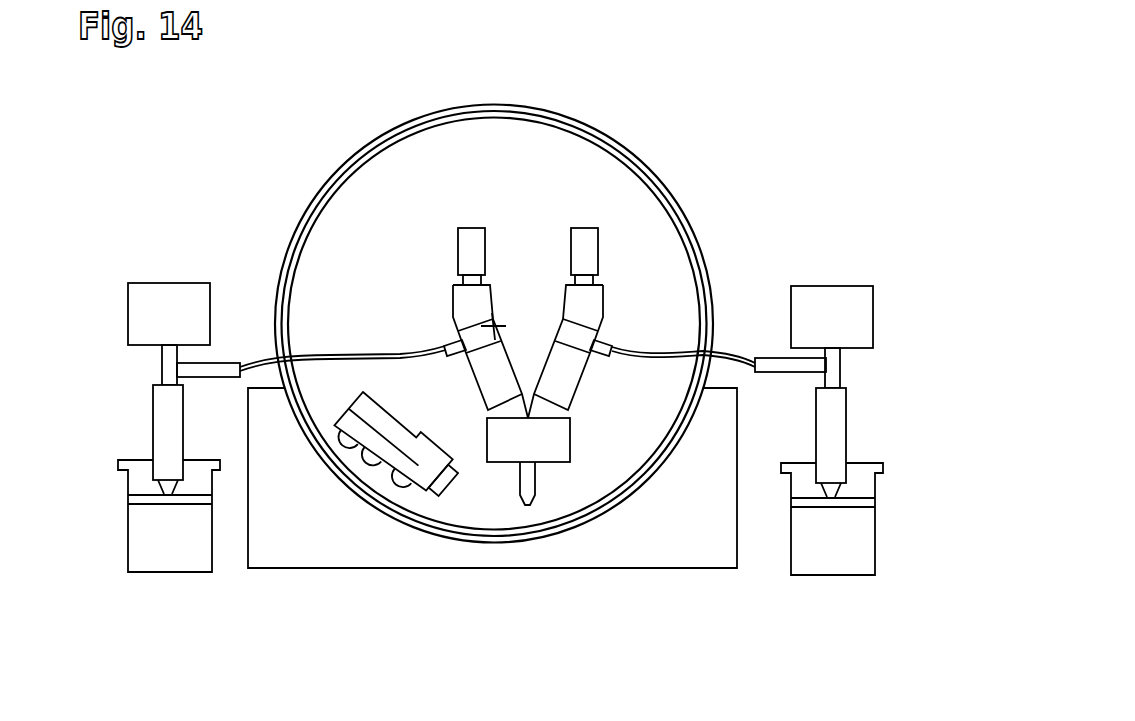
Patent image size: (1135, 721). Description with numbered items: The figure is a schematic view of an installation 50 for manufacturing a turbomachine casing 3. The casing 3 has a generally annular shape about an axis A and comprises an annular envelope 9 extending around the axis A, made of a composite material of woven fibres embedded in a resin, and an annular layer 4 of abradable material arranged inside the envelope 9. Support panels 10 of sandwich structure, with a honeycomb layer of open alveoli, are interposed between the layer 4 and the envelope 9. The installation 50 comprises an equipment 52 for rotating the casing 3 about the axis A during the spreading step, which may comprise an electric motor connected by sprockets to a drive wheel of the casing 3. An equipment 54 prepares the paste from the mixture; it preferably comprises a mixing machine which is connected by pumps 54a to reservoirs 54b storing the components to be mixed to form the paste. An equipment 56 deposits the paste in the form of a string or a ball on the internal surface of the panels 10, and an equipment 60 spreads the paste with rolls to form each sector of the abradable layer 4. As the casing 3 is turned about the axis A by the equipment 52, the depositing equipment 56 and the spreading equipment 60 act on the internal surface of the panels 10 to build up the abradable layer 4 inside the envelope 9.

The casing 3 is at (594, 124).
The annular envelope 9 is at (628, 153).
The support panels 10 is at (661, 195).
The annular layer of abradable material 4 is at (680, 237).
The installation 50 is at (802, 172).
The equipment for rotating the casing 52 is at (684, 590).
The equipment for preparing the paste 54 is at (432, 308).
The pumps 54a is at (128, 314).
The reservoirs 54b is at (128, 537).
The equipment for depositing the paste 56 is at (556, 497).
The equipment for spreading the paste 60 is at (449, 502).
The axis A is at (497, 324).